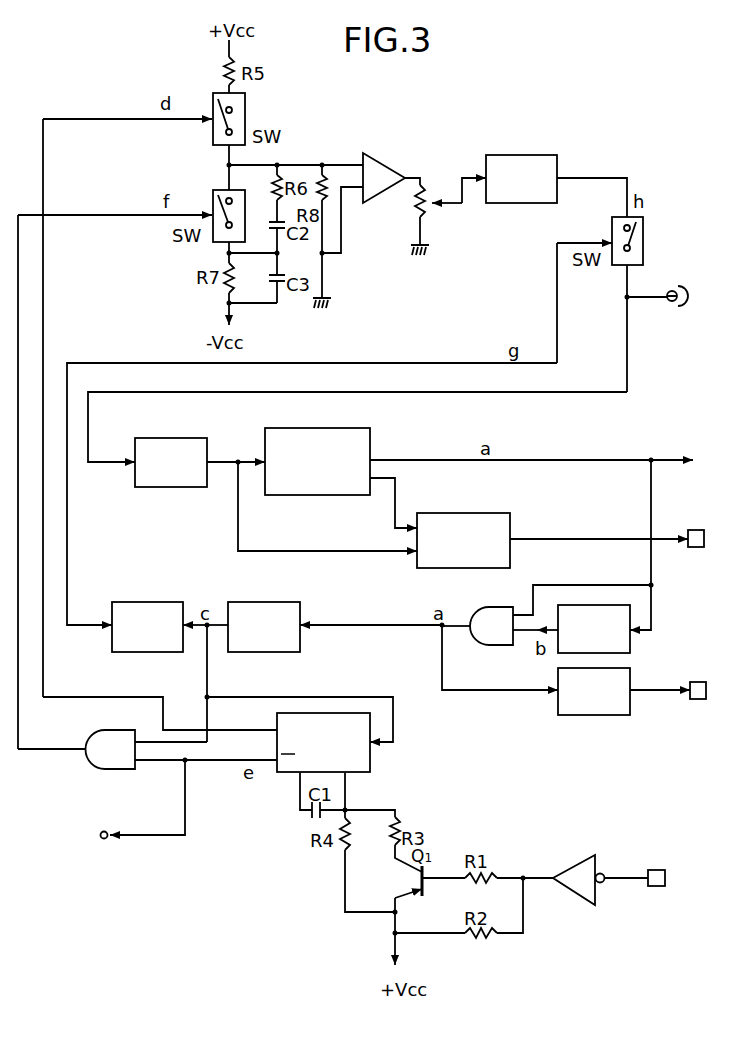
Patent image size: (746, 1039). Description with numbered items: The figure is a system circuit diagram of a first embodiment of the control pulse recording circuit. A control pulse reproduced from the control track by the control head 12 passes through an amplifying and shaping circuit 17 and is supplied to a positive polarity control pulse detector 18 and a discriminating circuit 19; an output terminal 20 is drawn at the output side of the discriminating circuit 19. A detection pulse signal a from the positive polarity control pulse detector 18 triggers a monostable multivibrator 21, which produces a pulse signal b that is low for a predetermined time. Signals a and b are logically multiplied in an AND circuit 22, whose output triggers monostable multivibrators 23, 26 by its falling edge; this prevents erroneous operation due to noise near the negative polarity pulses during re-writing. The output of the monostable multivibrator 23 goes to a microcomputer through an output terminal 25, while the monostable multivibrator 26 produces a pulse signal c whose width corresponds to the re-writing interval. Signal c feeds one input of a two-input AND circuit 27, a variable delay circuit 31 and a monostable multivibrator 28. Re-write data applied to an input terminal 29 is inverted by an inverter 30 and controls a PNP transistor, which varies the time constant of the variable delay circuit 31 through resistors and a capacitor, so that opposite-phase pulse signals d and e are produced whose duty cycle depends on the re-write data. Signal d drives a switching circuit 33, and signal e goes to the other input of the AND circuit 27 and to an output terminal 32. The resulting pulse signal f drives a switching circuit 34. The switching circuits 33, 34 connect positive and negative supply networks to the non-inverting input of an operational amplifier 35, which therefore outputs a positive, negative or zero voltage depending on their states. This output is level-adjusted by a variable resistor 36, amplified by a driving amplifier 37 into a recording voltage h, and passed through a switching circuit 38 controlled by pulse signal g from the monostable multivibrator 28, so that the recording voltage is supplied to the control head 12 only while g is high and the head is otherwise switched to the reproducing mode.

The control head 12 is at (672, 303).
The amplifying and shaping circuit 17 is at (170, 432).
The positive polarity control pulse detector 18 is at (316, 422).
The discriminating circuit 19 is at (462, 513).
The output terminal 20 is at (695, 530).
The monostable multivibrator 21 is at (631, 650).
The AND circuit 22 is at (492, 607).
The monostable multivibrator 23 is at (596, 716).
The output terminal 25 is at (697, 682).
The monostable multivibrator 26 is at (263, 598).
The 2-input AND circuit 27 is at (118, 725).
The monostable multivibrator 28 is at (147, 598).
The input terminal 29 is at (656, 870).
The inverter 30 is at (576, 866).
The variable delay circuit 31 is at (276, 715).
The output terminal 32 is at (103, 831).
The switching circuit 33 is at (246, 112).
The switching circuit 34 is at (216, 191).
The operational amplifier 35 is at (379, 167).
The variable resistor 36 is at (428, 196).
The driving amplifier 37 is at (518, 155).
The switching circuit 38 is at (644, 240).